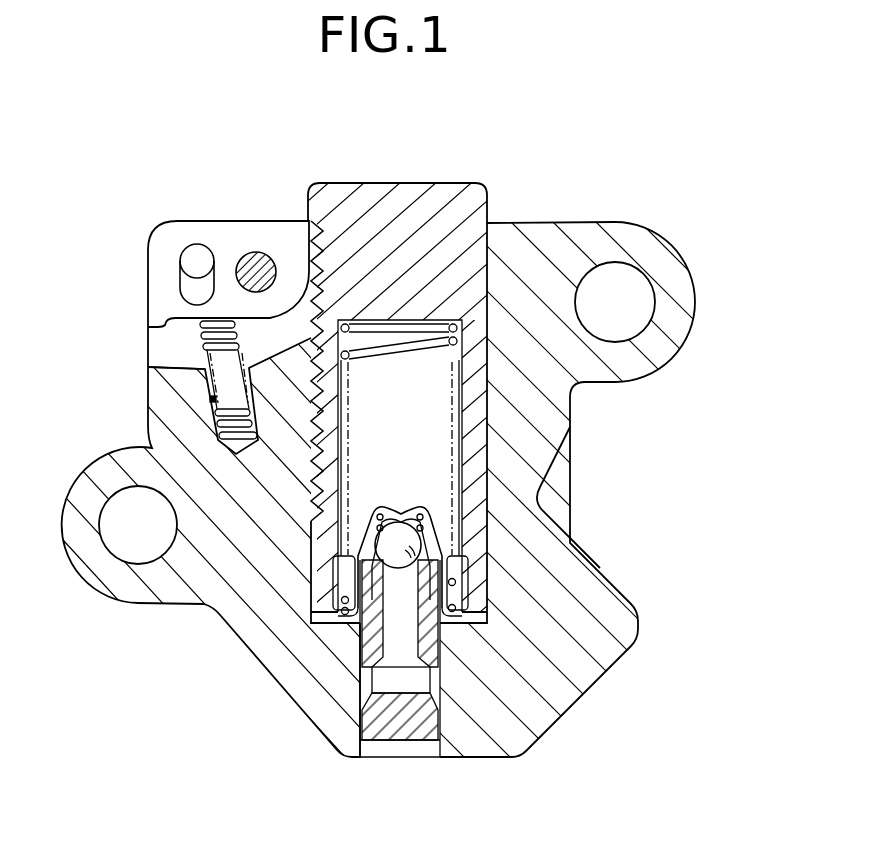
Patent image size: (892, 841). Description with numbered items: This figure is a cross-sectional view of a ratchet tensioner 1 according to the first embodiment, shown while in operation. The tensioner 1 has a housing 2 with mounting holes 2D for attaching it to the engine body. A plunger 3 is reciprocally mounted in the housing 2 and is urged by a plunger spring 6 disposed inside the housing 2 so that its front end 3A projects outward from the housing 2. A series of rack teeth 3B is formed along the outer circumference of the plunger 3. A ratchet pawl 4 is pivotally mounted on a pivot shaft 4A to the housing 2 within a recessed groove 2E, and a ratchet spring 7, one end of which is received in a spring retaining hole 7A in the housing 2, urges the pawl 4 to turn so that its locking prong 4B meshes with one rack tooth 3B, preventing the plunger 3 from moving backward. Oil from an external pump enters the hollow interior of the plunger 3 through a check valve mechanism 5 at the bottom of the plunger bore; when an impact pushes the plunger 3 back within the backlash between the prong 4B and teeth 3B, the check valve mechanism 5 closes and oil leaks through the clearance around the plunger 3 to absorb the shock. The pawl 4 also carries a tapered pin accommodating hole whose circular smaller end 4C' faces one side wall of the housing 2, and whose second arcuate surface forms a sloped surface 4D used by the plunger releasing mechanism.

The ratchet tensioner 1 is at (563, 167).
The housing 2 is at (580, 628).
The mounting holes 2D is at (630, 303).
The recessed groove 2E is at (163, 338).
The plunger 3 is at (453, 215).
The front end of the plunger 3A is at (420, 197).
The rack teeth 3B is at (343, 284).
The ratchet pawl 4 is at (226, 232).
The pivot shaft 4A is at (258, 253).
The locking prong 4B is at (312, 228).
The smaller end of the pin accommodating hole 4C' is at (169, 215).
The sloped surface 4D is at (187, 287).
The check valve mechanism 5 is at (402, 500).
The plunger spring 6 is at (353, 357).
The ratchet spring 7 is at (200, 345).
The spring retaining hole 7A is at (213, 400).